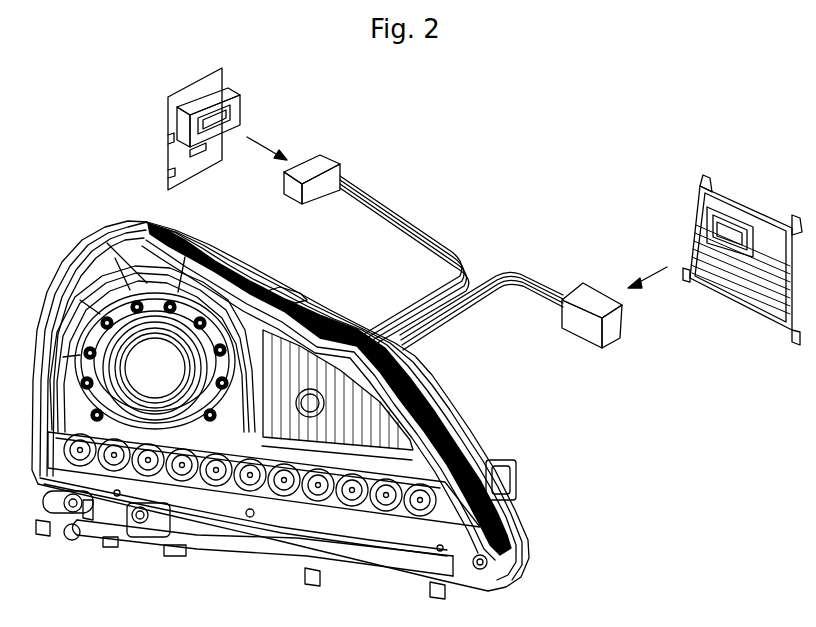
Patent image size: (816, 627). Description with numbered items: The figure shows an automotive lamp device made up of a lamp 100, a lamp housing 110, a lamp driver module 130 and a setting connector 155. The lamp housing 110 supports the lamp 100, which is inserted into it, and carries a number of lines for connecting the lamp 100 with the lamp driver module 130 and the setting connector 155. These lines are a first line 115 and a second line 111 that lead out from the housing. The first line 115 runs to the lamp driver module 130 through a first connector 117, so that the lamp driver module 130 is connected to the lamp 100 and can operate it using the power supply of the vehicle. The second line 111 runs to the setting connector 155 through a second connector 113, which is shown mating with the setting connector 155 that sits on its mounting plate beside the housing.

The lamp 100 is at (157, 357).
The lamp housing 110 is at (100, 228).
The second line 111 is at (433, 238).
The second connector 113 is at (323, 161).
The first line 115 is at (513, 277).
The first connector 117 is at (592, 315).
The lamp driver module 130 is at (735, 200).
The setting connector 155 is at (224, 74).